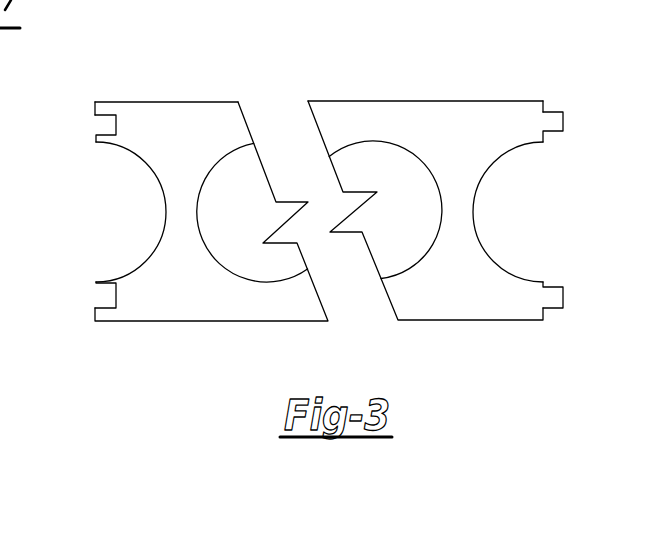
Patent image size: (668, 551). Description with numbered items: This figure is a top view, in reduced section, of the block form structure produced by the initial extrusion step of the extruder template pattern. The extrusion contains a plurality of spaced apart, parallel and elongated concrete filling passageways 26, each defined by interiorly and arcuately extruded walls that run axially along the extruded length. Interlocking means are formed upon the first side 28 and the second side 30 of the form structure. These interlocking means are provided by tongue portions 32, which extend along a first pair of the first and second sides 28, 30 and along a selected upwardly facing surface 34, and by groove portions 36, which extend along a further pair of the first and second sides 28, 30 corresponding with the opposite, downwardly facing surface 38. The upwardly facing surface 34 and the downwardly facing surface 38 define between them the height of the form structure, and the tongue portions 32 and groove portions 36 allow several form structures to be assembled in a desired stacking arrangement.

The concrete filling passageways 26 is at (347, 235).
The first side 28 is at (77, 333).
The second side 30 is at (63, 97).
The tongue portions 32 is at (563, 125).
The upwardly facing surface 34 is at (547, 198).
The groove portions 36 is at (105, 123).
The downwardly facing surface 38 is at (100, 213).